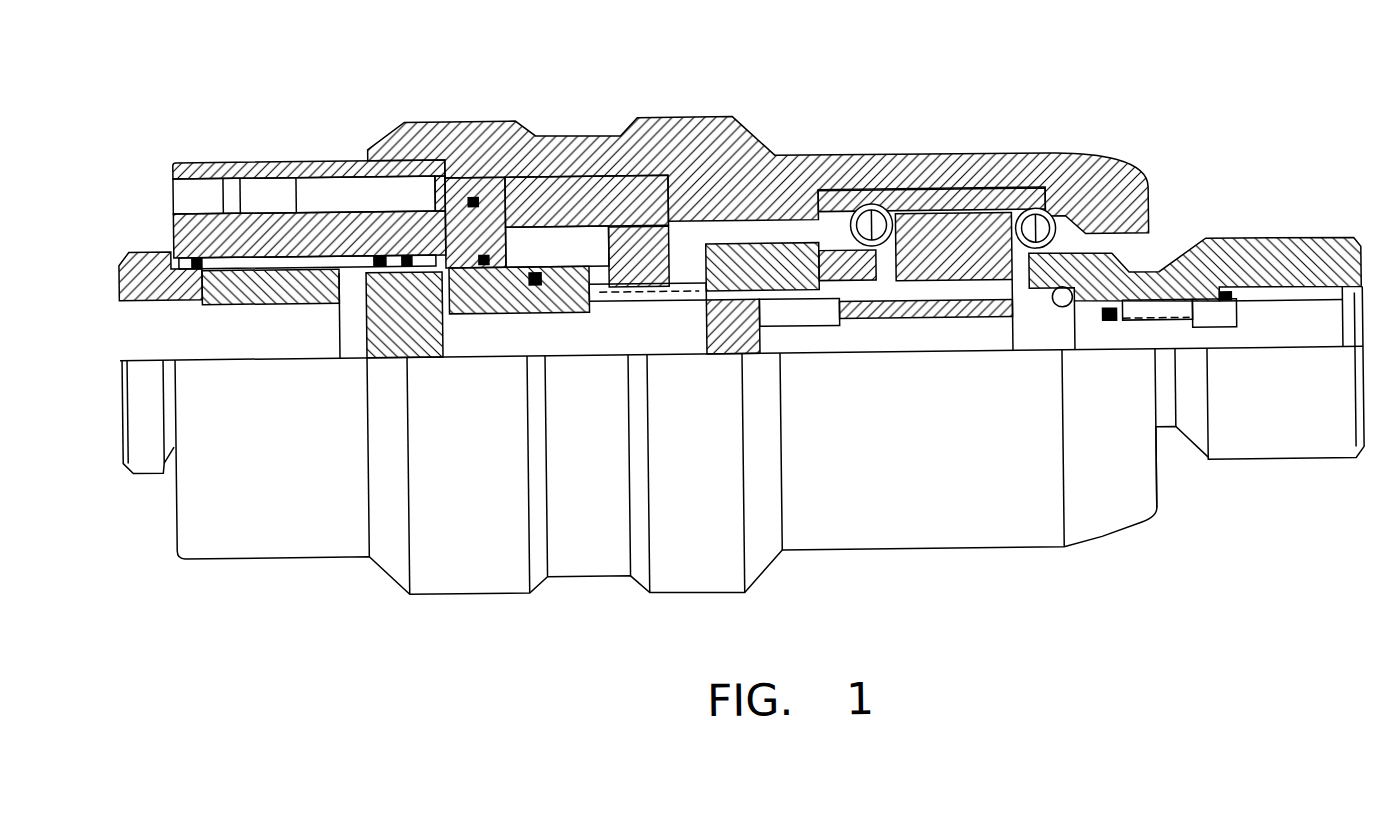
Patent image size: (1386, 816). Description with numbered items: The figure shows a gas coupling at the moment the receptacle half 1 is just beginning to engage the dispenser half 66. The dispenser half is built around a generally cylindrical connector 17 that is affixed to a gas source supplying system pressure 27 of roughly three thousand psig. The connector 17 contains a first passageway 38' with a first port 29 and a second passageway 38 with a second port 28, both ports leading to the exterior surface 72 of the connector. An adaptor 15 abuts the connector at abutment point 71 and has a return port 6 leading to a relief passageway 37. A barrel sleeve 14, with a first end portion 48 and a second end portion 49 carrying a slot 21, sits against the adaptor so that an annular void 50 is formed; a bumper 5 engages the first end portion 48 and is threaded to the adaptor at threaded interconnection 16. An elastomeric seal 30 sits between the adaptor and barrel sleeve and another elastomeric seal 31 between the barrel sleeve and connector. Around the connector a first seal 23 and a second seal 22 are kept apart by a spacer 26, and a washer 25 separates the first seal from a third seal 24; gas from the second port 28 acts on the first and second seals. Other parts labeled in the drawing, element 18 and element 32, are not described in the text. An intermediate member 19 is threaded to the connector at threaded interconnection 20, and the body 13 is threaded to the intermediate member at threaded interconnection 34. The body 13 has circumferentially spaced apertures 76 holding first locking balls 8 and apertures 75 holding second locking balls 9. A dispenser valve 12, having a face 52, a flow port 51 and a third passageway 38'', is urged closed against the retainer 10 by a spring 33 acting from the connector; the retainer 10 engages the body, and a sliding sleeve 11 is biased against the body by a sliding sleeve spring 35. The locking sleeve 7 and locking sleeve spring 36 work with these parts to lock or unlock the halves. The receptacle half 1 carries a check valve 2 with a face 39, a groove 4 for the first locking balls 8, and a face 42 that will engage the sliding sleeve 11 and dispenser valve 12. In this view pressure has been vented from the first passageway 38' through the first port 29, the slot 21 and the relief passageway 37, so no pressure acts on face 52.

The receptacle half 1 is at (1275, 229).
The check valve 2 is at (1087, 341).
The groove 4 is at (1160, 277).
The bumper 5 is at (700, 143).
The return port 6 is at (200, 197).
The locking sleeve 7 is at (870, 162).
The first locking balls 8 is at (1120, 175).
The second locking balls 9 is at (880, 262).
The retainer 10 is at (800, 301).
The sliding sleeve 11 is at (940, 283).
The dispenser valve 12 is at (735, 290).
The body 13 is at (872, 180).
The barrel sleeve 14 is at (505, 168).
The adaptor 15 is at (270, 165).
The threaded interconnection 16 is at (447, 157).
The connector 17 is at (195, 159).
The flange 18 is at (140, 297).
The intermediate member 19 is at (622, 239).
The threaded interconnection 20 is at (595, 299).
The slot 21 is at (373, 146).
The second seal 22 is at (218, 269).
The first seal 23 is at (395, 276).
The third seal 24 is at (410, 287).
The washer 25 is at (405, 282).
The spacer 26 is at (280, 275).
The system pressure 27 is at (168, 336).
The second port 28 is at (352, 286).
The first port 29 is at (458, 297).
The elastomeric seal 30 is at (477, 157).
The elastomeric seal 31 is at (538, 330).
The seal 32 is at (538, 280).
The spring 33 is at (655, 291).
The threaded interconnection 34 is at (735, 300).
The sliding sleeve spring 35 is at (830, 291).
The locking sleeve spring 36 is at (1000, 168).
The relief passageway 37 is at (308, 155).
The second passageway 38 is at (272, 381).
The first passageway 38' is at (598, 403).
The third passageway 38'' is at (1021, 391).
The face 39 is at (1088, 341).
The face 42 is at (1067, 356).
The first end portion 48 is at (787, 164).
The second end portion 49 is at (418, 147).
The annular void 50 is at (407, 154).
The flow port 51 is at (790, 311).
The face 52 is at (715, 300).
The dispenser half 66 is at (587, 109).
The abutment point 71 is at (155, 266).
The exterior surface 72 is at (237, 160).
The apertures 75 is at (845, 282).
The apertures 76 is at (1150, 217).